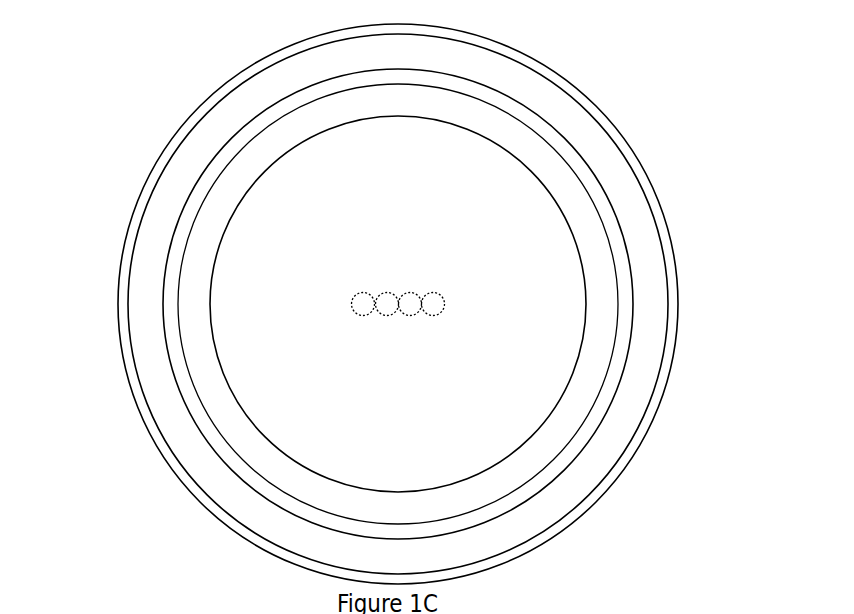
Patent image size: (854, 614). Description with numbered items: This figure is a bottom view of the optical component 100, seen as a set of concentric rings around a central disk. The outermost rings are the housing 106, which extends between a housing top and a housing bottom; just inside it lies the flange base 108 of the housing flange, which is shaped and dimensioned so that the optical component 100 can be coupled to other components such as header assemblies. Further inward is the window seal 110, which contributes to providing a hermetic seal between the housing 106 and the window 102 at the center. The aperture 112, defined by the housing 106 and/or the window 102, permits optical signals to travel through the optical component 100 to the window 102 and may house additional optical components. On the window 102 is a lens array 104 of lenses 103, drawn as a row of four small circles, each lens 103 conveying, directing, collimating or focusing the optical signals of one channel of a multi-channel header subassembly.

The optical component 100 is at (143, 131).
The window 102 is at (320, 383).
The lens 103 is at (436, 297).
The lens array 104 is at (453, 304).
The housing 106 is at (543, 62).
The flange base 108 is at (623, 420).
The window seal 110 is at (508, 467).
The aperture 112 is at (273, 265).